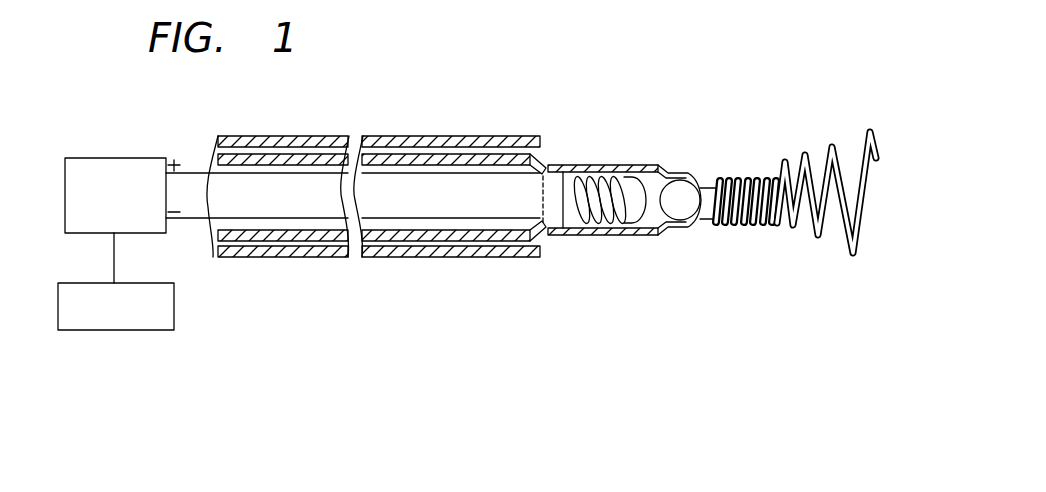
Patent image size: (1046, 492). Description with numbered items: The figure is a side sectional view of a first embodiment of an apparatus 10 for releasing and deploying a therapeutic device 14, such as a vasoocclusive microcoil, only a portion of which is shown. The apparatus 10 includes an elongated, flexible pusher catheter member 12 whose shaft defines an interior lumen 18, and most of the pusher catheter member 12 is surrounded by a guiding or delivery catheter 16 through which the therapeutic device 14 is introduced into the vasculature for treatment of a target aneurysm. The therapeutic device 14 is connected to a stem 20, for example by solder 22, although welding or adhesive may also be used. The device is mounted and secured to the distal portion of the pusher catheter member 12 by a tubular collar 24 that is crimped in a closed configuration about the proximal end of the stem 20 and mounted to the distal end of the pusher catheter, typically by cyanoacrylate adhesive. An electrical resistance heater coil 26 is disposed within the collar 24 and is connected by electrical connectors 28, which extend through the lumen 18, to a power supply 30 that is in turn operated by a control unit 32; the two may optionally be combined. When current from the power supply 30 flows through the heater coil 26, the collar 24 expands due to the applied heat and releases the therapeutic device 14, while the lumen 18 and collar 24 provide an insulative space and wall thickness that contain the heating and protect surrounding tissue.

The apparatus 10 is at (689, 126).
The pusher catheter member 12 is at (506, 153).
The therapeutic device 14 is at (793, 232).
The delivery catheter 16 is at (433, 254).
The interior lumen 18 is at (472, 170).
The stem 20 is at (698, 221).
The solder 22 is at (722, 178).
The tubular collar 24 is at (602, 165).
The electrical resistance heater coil 26 is at (580, 207).
The electrical connectors 28 is at (325, 170).
The power supply 30 is at (118, 158).
The control unit 32 is at (174, 302).